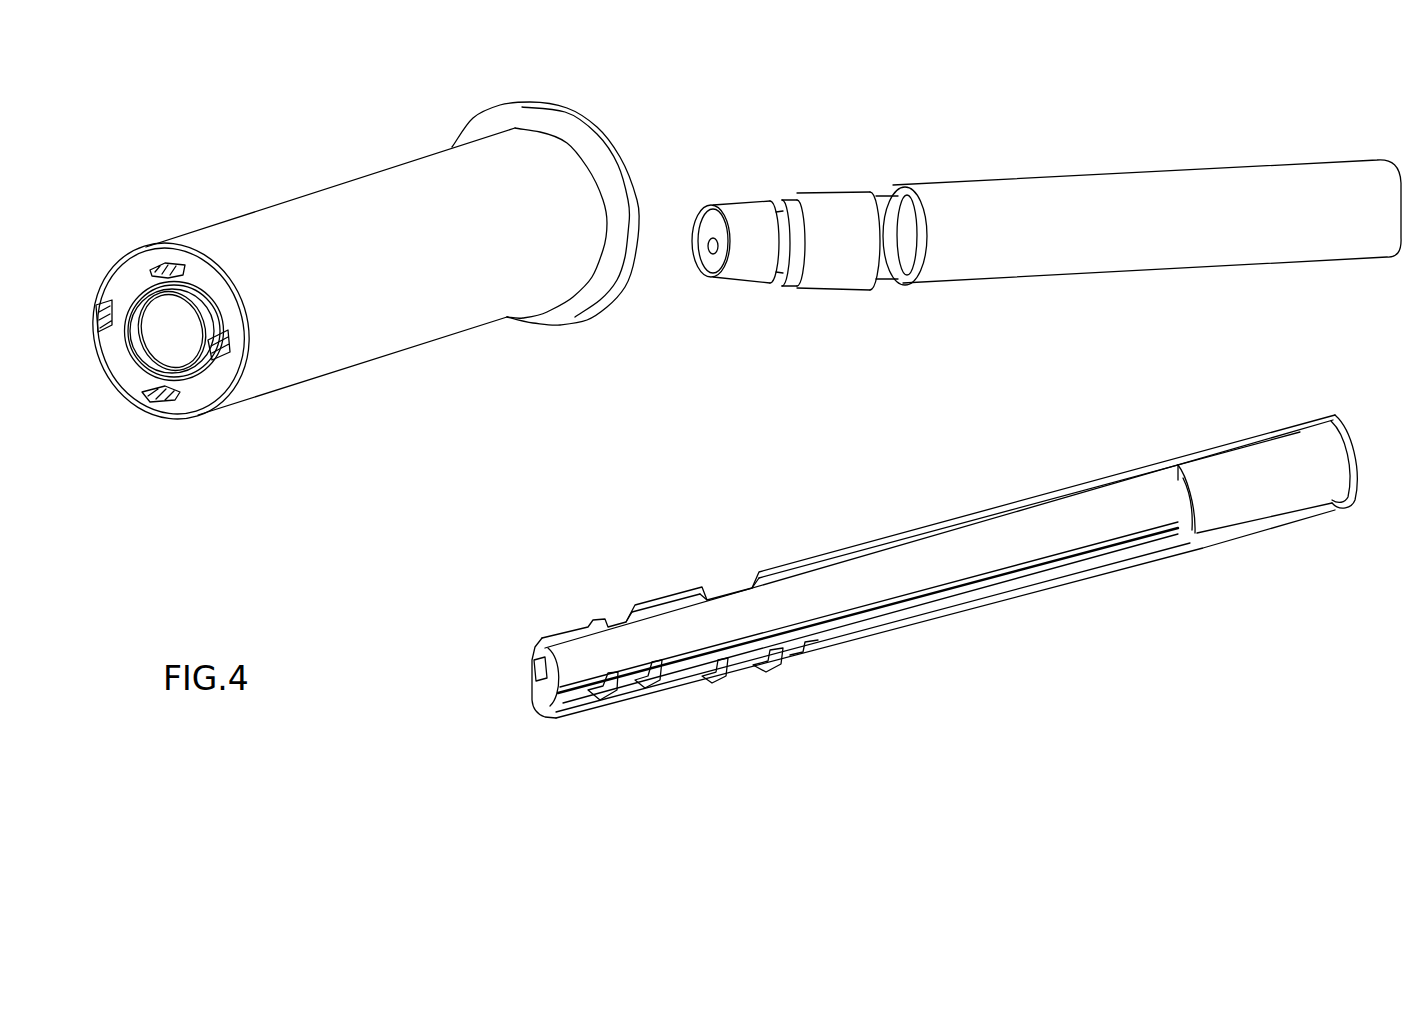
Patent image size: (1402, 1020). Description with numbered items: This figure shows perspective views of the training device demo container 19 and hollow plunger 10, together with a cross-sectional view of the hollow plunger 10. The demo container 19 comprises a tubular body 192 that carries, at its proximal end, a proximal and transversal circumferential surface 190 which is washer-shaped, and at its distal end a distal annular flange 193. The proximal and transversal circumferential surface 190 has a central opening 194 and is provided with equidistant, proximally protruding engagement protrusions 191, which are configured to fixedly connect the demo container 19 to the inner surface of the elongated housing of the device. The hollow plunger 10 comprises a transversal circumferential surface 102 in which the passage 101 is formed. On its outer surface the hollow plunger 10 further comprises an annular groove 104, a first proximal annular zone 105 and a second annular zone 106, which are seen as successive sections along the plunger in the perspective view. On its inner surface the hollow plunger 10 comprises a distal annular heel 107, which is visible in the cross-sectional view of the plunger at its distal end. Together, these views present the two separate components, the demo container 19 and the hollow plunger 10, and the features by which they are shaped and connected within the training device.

The hollow plunger 10 is at (1152, 239).
The demo container 19 is at (450, 277).
The passage 101 is at (707, 260).
The transversal circumferential surface 102 is at (727, 257).
The annular groove 104 is at (893, 253).
The first proximal annular zone 105 is at (747, 220).
The second annular zone 106 is at (837, 213).
The distal annular heel 107 is at (1197, 533).
The proximal and transversal circumferential surface 190 is at (203, 383).
The engagement protrusions 191 is at (153, 395).
The tubular body 192 is at (350, 215).
The distal annular flange 193 is at (492, 123).
The central opening 194 is at (173, 305).